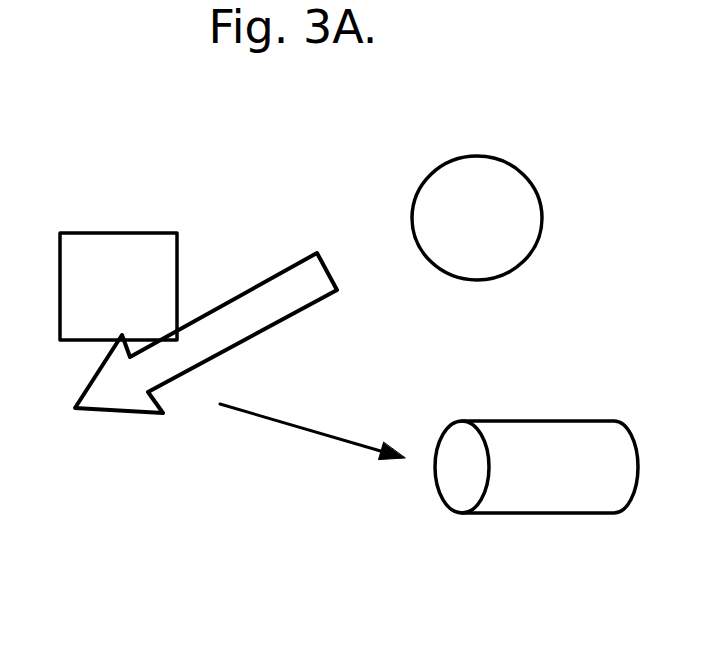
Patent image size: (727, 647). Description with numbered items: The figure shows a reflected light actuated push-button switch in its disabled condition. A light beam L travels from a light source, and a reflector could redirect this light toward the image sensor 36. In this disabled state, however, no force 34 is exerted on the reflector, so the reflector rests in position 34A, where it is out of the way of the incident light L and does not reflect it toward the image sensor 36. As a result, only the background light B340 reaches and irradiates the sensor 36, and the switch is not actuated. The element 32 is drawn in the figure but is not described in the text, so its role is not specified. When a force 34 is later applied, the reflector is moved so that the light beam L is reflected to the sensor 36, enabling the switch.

The force 34 is at (118, 215).
The reflector position 34A is at (86, 300).
The detector 32 is at (497, 231).
The image sensor 36 is at (577, 487).
The light beam L is at (278, 293).
The background light B340 is at (292, 433).